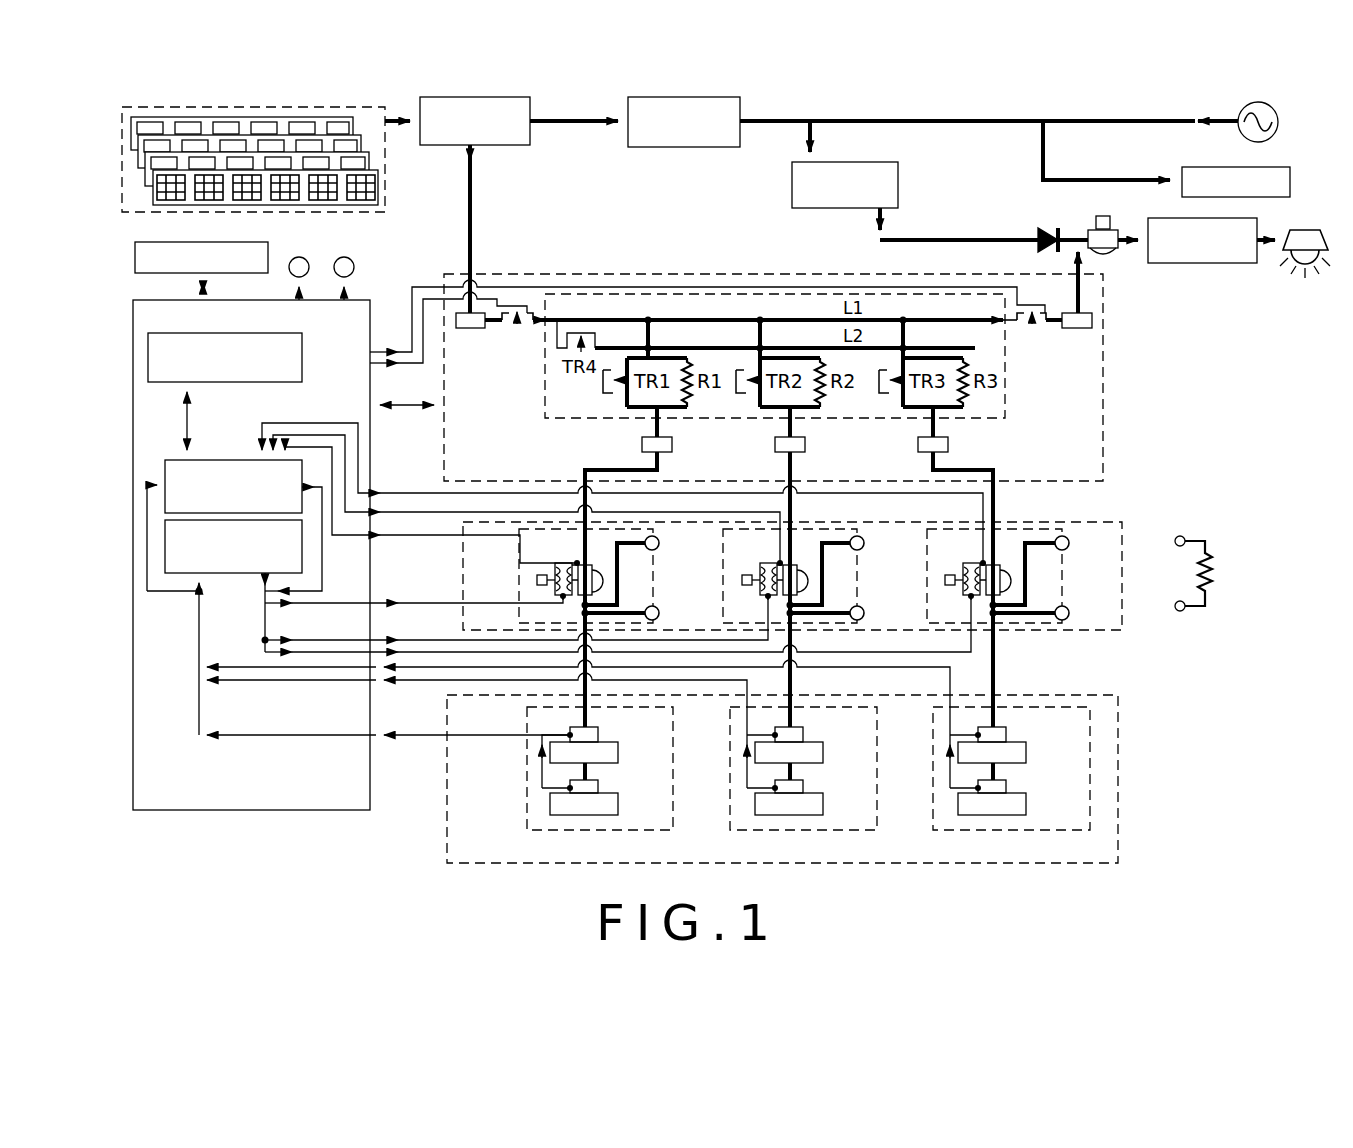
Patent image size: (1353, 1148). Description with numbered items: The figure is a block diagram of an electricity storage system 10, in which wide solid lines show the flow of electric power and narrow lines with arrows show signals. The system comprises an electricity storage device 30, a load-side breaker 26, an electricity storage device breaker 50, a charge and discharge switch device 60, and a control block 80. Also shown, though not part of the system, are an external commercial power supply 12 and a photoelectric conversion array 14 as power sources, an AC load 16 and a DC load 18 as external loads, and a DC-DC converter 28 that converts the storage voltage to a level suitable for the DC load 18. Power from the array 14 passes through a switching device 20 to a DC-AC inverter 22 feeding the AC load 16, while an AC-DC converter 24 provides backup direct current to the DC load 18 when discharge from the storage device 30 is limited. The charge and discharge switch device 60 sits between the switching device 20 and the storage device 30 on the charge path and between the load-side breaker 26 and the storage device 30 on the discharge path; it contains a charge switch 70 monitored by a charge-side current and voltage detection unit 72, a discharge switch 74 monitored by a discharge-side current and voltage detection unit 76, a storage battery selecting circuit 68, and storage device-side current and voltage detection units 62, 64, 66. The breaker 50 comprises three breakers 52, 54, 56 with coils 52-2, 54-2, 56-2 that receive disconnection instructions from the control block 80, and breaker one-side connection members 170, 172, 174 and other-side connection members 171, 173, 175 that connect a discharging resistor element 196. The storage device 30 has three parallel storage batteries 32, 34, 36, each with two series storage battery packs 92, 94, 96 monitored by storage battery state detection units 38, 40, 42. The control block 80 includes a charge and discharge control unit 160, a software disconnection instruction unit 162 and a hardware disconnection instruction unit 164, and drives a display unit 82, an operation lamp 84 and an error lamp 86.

The electricity storage system 10 is at (1163, 745).
The external commercial power supply 12 is at (1240, 130).
The photoelectric conversion array 14 is at (385, 182).
The AC load 16 is at (1178, 190).
The DC load 18 is at (1305, 287).
The switching device 20 is at (500, 147).
The DC-AC inverter 22 is at (680, 147).
The AC-DC converter 24 is at (898, 185).
The load-side breaker 26 is at (1122, 264).
The DC-DC converter 28 is at (1200, 265).
The electricity storage device 30 is at (1118, 697).
The storage battery 32 is at (570, 784).
The storage battery 34 is at (774, 784).
The storage battery 36 is at (982, 784).
The storage battery state detection unit 38 is at (598, 734).
The storage battery state detection unit 40 is at (803, 734).
The storage battery state detection unit 42 is at (1006, 734).
The electricity storage device breaker 50 is at (1083, 519).
The breaker 52 is at (588, 576).
The coil 52-2 is at (560, 560).
The breaker 54 is at (793, 578).
The coil 54-2 is at (765, 560).
The breaker 56 is at (997, 578).
The coil 56-2 is at (968, 560).
The charge and discharge switch device 60 is at (1103, 452).
The electricity storage device-side current and voltage detection unit 62 is at (672, 445).
The electricity storage device-side current and voltage detection unit 64 is at (805, 445).
The electricity storage device-side current and voltage detection unit 66 is at (948, 445).
The storage battery selecting circuit 68 is at (1005, 410).
The charge switch 70 is at (509, 330).
The charge-side current and voltage detection unit 72 is at (470, 330).
The discharge switch 74 is at (1036, 328).
The discharge-side current and voltage detection unit 76 is at (1078, 330).
The control block 80 is at (370, 778).
The display unit 82 is at (187, 243).
The operation lamp 84 is at (295, 257).
The error lamp 86 is at (340, 257).
The storage battery pack 92 is at (618, 752).
The storage battery pack 94 is at (823, 752).
The storage battery pack 96 is at (1026, 752).
The charge and discharge control unit 160 is at (302, 358).
The software disconnection instruction unit 162 is at (225, 460).
The hardware disconnection instruction unit 164 is at (230, 574).
The breaker one-side connection member 170 is at (657, 549).
The breaker other-side connection member 171 is at (657, 607).
The breaker one-side connection member 172 is at (862, 549).
The breaker other-side connection member 173 is at (862, 607).
The breaker one-side connection member 174 is at (1067, 549).
The breaker other-side connection member 175 is at (1067, 607).
The discharging resistor element 196 is at (1215, 572).